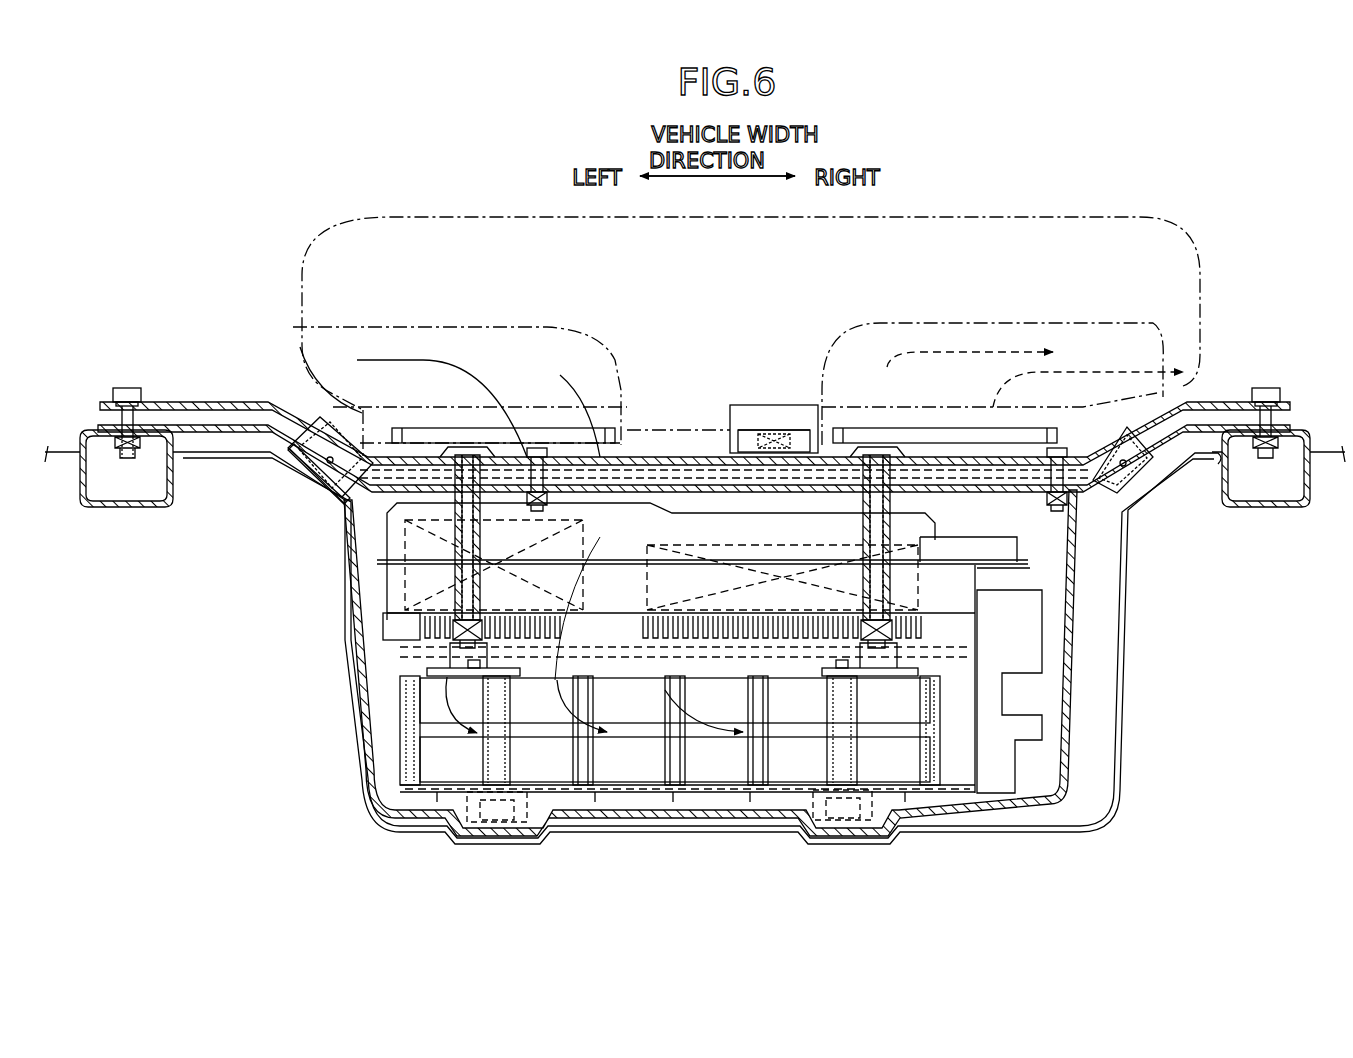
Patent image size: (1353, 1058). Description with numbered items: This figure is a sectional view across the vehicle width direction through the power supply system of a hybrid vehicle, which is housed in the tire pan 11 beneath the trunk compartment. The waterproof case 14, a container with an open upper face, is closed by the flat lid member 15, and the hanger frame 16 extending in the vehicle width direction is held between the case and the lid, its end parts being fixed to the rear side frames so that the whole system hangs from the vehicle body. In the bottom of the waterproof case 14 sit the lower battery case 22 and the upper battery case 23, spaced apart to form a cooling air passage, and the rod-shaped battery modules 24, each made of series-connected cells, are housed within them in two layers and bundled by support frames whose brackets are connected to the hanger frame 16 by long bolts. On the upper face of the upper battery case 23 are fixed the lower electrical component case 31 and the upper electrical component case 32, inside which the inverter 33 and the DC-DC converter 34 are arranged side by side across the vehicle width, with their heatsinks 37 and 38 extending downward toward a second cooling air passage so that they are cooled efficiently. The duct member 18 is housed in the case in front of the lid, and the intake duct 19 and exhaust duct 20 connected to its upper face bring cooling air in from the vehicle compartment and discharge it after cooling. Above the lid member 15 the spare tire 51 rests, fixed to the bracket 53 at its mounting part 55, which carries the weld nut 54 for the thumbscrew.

The tire pan 11 is at (705, 835).
The waterproof case 14 is at (663, 822).
The lid member 15 is at (697, 457).
The hanger frame 16 is at (775, 493).
The duct member 18 is at (657, 437).
The intake duct 19 is at (433, 327).
The exhaust duct 20 is at (1030, 323).
The lower battery case 22 is at (625, 795).
The upper battery case 23 is at (612, 613).
The battery module 24 is at (615, 712).
The lower electrical component case 31 is at (377, 563).
The upper electrical component case 32 is at (387, 520).
The inverter 33 is at (600, 537).
The DC-DC converter 34 is at (925, 548).
The heatsink 37 is at (510, 640).
The heatsink 38 is at (700, 640).
The spare tire 51 is at (988, 217).
The bracket 53 is at (757, 405).
The weld nut 54 is at (773, 440).
The mounting part 55 is at (796, 430).